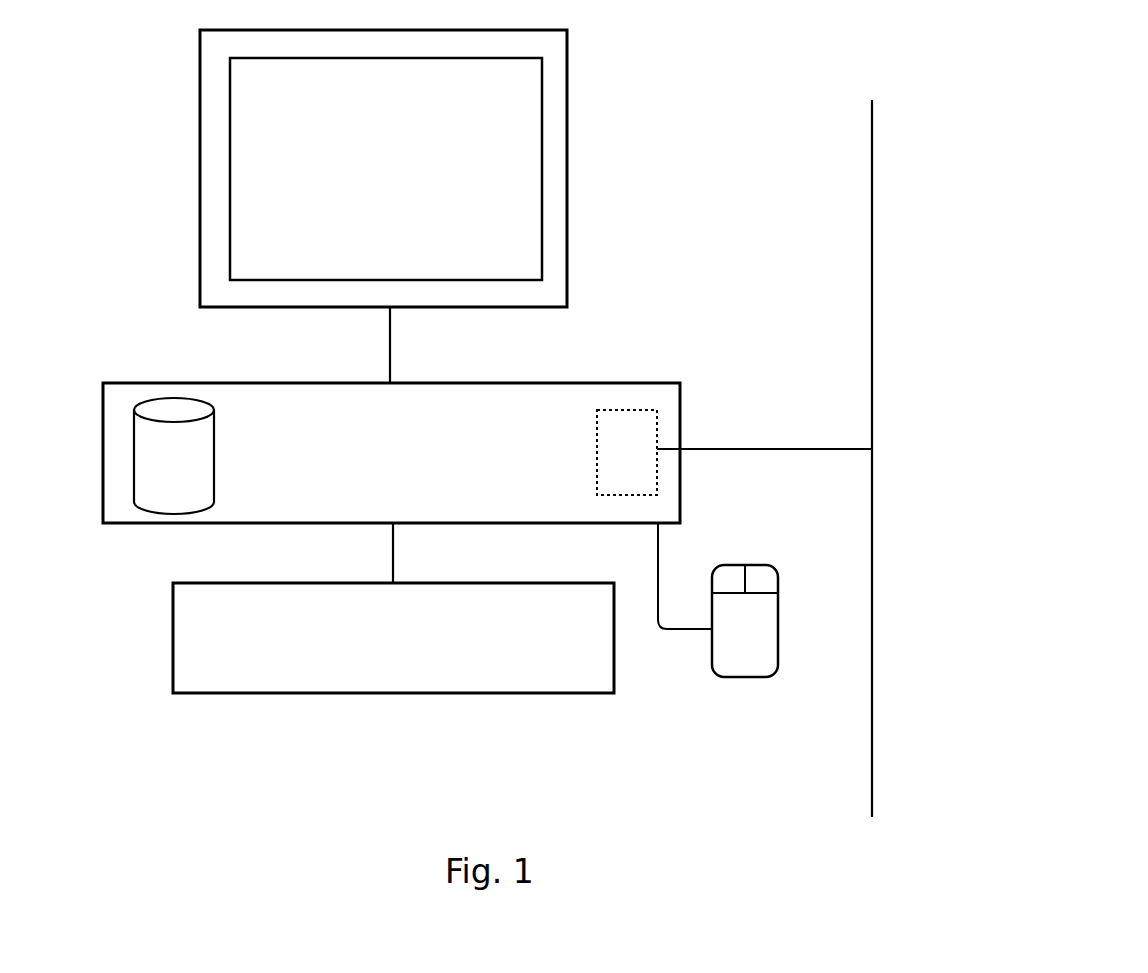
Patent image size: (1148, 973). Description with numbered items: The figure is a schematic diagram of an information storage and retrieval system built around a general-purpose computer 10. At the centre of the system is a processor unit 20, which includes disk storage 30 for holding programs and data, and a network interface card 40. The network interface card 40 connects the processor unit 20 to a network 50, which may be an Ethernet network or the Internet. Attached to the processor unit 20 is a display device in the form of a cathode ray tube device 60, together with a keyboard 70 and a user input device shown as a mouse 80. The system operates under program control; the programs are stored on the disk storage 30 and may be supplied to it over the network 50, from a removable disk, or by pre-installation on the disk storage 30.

The general-purpose computer 10 is at (107, 120).
The processor unit 20 is at (596, 382).
The disk storage 30 is at (172, 396).
The network interface card 40 is at (657, 434).
The network 50 is at (874, 322).
The cathode ray tube device 60 is at (571, 150).
The keyboard 70 is at (558, 693).
The mouse 80 is at (740, 677).